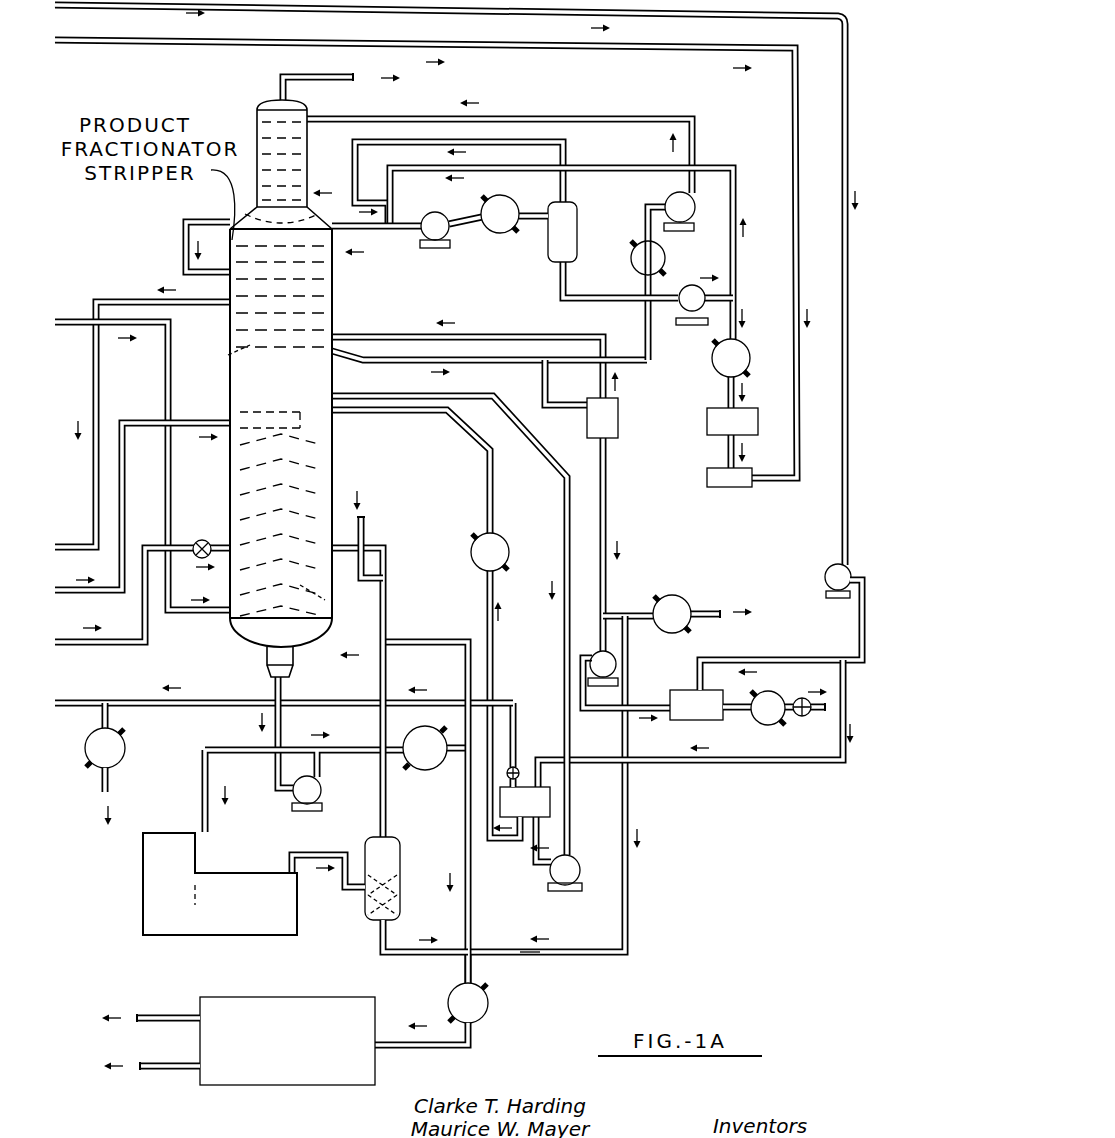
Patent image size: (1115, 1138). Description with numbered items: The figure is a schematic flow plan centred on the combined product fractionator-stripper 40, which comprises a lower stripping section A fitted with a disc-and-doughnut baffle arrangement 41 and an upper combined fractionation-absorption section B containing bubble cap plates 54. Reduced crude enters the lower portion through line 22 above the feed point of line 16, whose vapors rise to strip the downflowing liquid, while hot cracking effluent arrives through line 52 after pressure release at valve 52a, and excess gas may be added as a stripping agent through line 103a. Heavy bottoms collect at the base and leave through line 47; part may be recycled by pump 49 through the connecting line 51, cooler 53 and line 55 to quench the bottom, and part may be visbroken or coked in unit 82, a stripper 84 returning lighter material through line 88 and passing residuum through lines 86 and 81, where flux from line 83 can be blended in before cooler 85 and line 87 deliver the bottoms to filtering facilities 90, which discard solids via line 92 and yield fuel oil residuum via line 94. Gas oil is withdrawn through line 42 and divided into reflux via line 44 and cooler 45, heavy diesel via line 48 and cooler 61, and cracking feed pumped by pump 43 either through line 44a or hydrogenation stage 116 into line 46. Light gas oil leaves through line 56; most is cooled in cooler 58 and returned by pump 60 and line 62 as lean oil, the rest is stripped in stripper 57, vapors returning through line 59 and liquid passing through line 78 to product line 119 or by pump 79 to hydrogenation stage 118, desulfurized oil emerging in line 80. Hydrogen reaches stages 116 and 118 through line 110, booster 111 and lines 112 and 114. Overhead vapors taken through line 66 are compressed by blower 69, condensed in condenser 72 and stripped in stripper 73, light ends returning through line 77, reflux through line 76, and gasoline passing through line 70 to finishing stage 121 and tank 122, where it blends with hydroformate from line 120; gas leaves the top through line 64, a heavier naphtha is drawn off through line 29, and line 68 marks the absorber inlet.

The line 110 is at (150, 9).
The line 120 is at (518, 40).
The line 64 is at (277, 79).
The line 62 is at (687, 120).
The line 77 is at (572, 146).
The line 76 is at (740, 165).
The line 66 is at (432, 212).
The one stage blower 69 is at (432, 248).
The condenser 72 is at (510, 228).
The stripper 73 is at (578, 213).
The cooler 58 is at (630, 262).
The pump 60 is at (687, 230).
The line 70 is at (745, 375).
The finishing stage 121 is at (705, 422).
The tank 122 is at (714, 487).
The line 68 is at (182, 246).
The line 29 is at (122, 300).
The line 16 is at (160, 385).
The line 22 is at (125, 473).
The line 52 is at (124, 648).
The valve 52a is at (198, 541).
The bubble cap plates 54 is at (240, 380).
The upper combined fractionation-absorption section B is at (232, 320).
The lower stripping section A is at (335, 478).
The combined product fractionator-stripper 40 is at (334, 440).
The disc-and-doughnut baffle arrangement 41 is at (318, 585).
The line 59 is at (536, 338).
The line 56 is at (528, 363).
The stripper 57 is at (585, 428).
The line 78 is at (610, 470).
The pump 79 is at (590, 660).
The line 119 is at (708, 612).
The booster 111 is at (824, 577).
The line 114 is at (812, 656).
The line 112 is at (768, 766).
The hydrogenation stage 118 is at (710, 705).
The line 80 is at (800, 718).
The line 44 is at (470, 443).
The line 42 is at (550, 476).
The cooler 45 is at (468, 552).
The line 103a is at (368, 538).
The line 88 is at (390, 595).
The line 55 is at (462, 641).
The line 46 is at (246, 706).
The line 47 is at (288, 690).
The line 48 is at (128, 729).
The cooler 61 is at (124, 762).
The line 51 is at (368, 754).
The pump 49 is at (296, 812).
The cooler 53 is at (441, 770).
The line 44a is at (510, 742).
The hydrogenation stage 116 is at (562, 811).
The pump 43 is at (555, 893).
The line 83 is at (629, 912).
The line 81 is at (508, 930).
The stripper 84 is at (402, 882).
The unit 82 is at (258, 936).
The line 86 is at (418, 956).
The cooler 85 is at (486, 1015).
The line 87 is at (440, 1050).
The filtering facilities 90 is at (292, 1087).
The line 92 is at (186, 1013).
The line 94 is at (185, 1071).